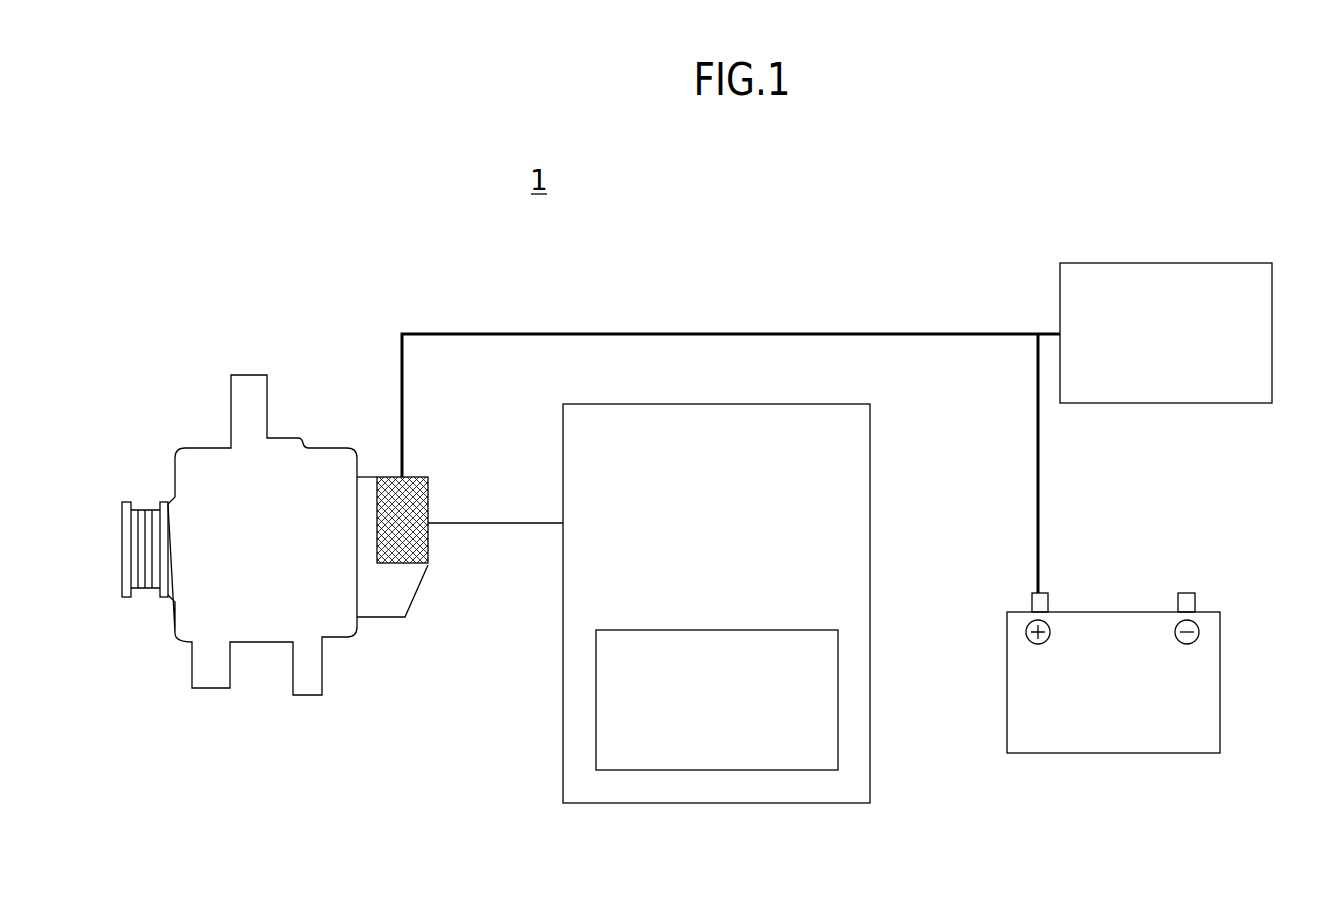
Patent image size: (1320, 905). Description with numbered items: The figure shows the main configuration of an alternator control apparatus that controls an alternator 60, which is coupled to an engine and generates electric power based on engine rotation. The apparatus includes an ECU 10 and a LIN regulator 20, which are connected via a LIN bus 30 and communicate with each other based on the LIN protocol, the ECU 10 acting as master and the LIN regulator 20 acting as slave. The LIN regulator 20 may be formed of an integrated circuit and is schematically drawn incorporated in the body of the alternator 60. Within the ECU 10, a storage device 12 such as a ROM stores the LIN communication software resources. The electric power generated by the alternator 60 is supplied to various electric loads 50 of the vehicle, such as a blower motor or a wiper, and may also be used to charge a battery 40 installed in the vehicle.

The ECU 10 is at (778, 404).
The storage device 12 is at (782, 630).
The LIN regulator 20 is at (412, 472).
The LIN bus 30 is at (458, 523).
The battery 40 is at (1220, 677).
The electric loads 50 is at (1230, 263).
The alternator 60 is at (287, 435).